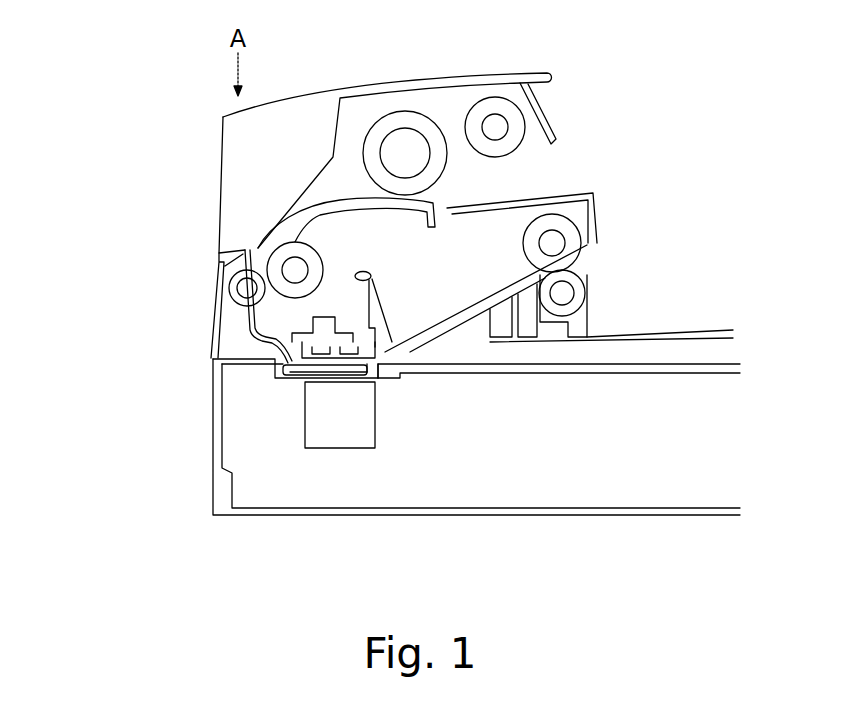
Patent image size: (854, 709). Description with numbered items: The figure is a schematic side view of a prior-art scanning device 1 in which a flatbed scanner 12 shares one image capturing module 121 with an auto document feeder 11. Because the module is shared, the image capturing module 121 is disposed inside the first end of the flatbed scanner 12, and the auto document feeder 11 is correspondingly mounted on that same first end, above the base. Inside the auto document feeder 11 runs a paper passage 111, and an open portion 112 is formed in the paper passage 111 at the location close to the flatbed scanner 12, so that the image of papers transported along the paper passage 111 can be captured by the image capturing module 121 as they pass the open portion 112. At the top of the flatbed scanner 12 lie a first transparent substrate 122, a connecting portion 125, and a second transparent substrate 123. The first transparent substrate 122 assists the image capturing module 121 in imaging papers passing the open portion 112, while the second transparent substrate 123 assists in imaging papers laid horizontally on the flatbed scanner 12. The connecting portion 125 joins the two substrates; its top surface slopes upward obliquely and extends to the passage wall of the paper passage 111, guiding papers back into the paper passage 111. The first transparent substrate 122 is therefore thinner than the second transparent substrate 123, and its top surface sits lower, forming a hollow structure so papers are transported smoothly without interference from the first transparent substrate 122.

The scanning device 1 is at (824, 85).
The auto document feeder 11 is at (139, 180).
The paper passage 111 is at (303, 195).
The open portion 112 is at (337, 357).
The flatbed scanner 12 is at (139, 432).
The image capturing module 121 is at (340, 415).
The first transparent substrate 122 is at (304, 371).
The second transparent substrate 123 is at (650, 373).
The connecting portion 125 is at (382, 372).